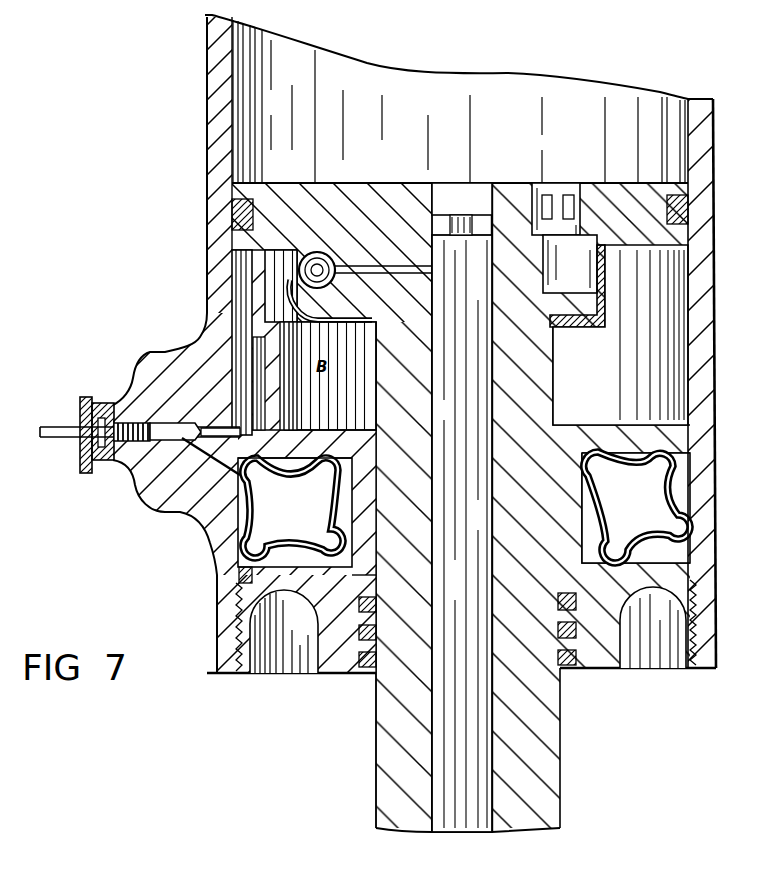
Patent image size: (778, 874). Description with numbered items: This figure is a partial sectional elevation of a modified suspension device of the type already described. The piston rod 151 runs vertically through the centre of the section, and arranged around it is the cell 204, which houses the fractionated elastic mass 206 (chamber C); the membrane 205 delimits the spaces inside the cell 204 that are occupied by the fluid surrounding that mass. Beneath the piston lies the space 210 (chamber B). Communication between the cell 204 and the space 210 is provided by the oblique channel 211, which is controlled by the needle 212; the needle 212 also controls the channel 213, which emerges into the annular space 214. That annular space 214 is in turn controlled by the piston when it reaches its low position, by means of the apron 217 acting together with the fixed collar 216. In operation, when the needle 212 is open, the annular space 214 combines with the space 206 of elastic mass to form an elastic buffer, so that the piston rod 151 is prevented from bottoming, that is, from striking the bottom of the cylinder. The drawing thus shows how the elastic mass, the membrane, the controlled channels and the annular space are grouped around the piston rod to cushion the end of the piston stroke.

The piston rod 151 is at (346, 201).
The apron 217 is at (261, 278).
The annular space 214 is at (244, 360).
The channel 213 is at (226, 428).
The fixed collar 216 is at (277, 392).
The space (chamber B) 210 is at (352, 413).
The cell 204 is at (342, 460).
The needle 212 is at (166, 438).
The oblique channel 211 is at (217, 467).
The fractionated elastic mass 206 is at (272, 515).
The membrane 205 is at (320, 551).